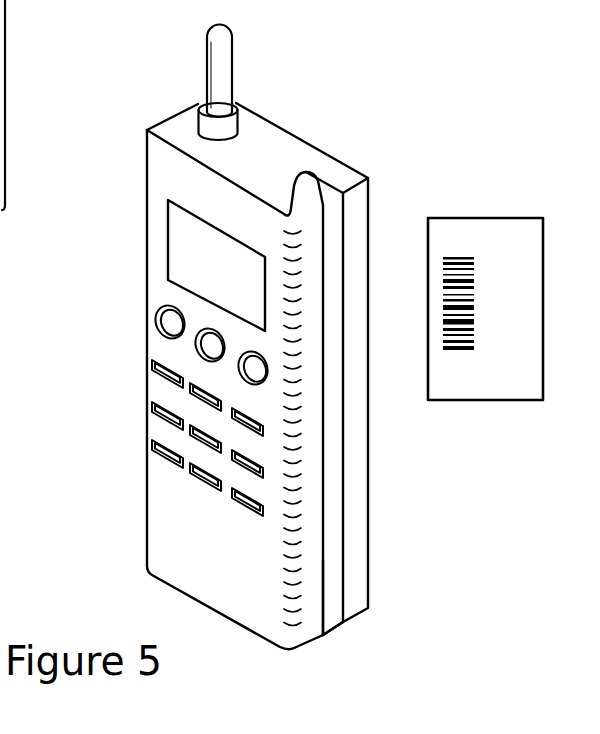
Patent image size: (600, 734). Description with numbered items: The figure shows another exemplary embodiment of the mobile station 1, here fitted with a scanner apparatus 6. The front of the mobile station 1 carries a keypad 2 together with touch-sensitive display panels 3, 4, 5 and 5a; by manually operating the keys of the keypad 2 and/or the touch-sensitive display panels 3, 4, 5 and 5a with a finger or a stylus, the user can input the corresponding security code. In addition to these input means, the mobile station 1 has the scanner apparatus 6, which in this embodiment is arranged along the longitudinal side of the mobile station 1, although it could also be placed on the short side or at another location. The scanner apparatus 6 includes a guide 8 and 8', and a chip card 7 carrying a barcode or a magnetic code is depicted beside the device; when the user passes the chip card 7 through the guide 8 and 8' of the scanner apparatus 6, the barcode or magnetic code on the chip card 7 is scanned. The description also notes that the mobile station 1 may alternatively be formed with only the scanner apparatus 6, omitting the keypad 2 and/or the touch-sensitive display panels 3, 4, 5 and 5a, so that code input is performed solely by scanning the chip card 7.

The mobile station 1 is at (274, 147).
The keypad 2 is at (175, 399).
The touch-sensitive display panel 3 is at (165, 321).
The touch-sensitive display panel 4 is at (208, 348).
The touch-sensitive display panel 5 is at (256, 373).
The touch-sensitive display panel 5a is at (183, 247).
The scanner apparatus 6 is at (320, 190).
The chip card 7 is at (497, 232).
The guide 8 is at (364, 414).
The guide 8' is at (319, 627).